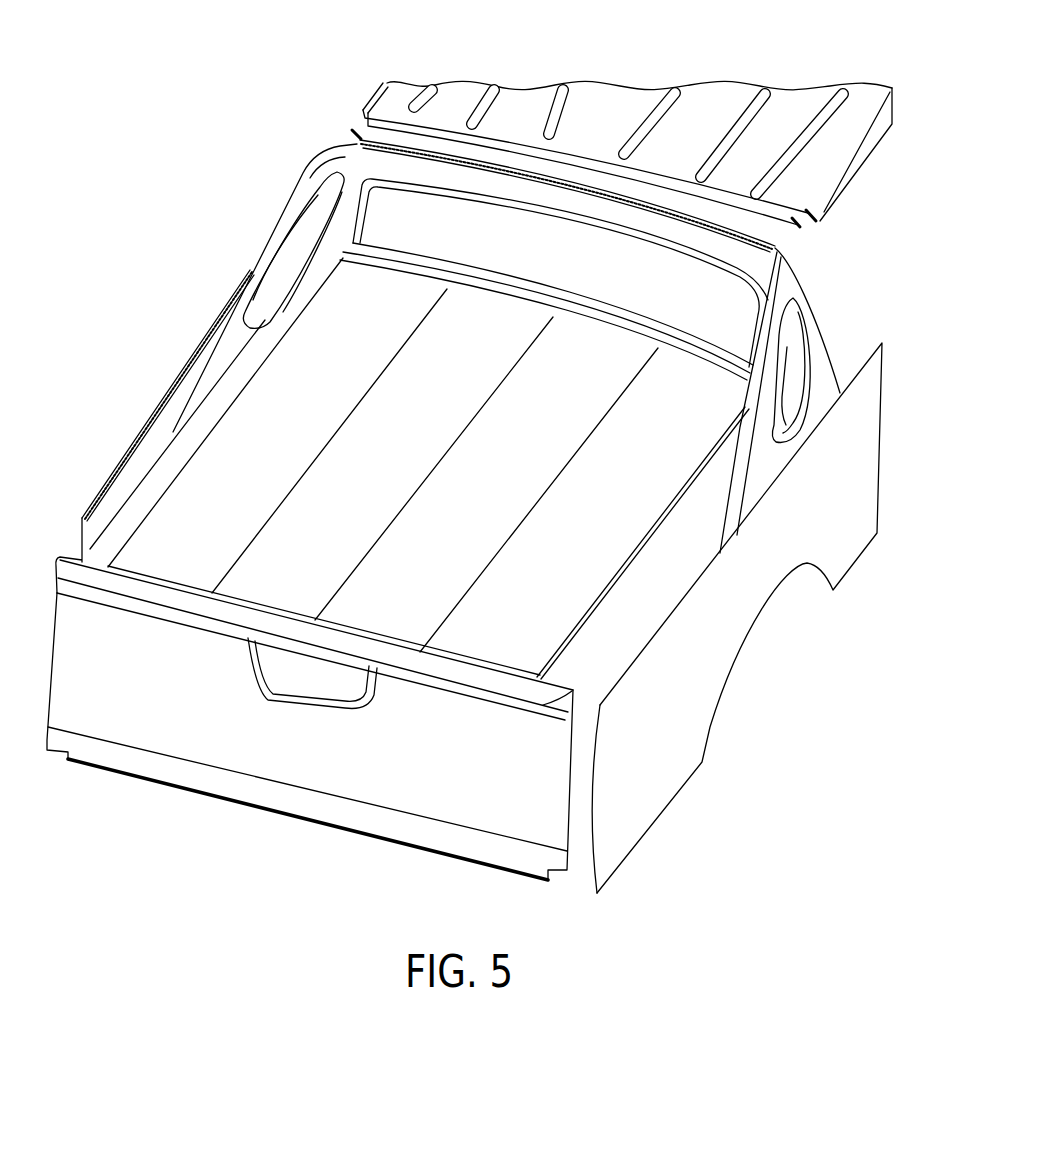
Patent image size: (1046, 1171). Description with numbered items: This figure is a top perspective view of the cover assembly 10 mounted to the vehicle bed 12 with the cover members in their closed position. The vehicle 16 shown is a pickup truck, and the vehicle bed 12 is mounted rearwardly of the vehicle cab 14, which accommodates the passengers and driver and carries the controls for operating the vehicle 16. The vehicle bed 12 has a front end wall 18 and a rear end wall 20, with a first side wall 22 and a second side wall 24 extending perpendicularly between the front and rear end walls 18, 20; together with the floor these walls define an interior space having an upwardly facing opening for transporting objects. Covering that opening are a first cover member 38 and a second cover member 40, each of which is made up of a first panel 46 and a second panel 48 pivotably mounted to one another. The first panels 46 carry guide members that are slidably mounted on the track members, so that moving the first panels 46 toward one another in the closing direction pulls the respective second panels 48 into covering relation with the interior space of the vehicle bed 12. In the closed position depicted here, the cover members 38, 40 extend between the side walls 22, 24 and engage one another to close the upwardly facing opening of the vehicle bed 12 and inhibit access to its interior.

The cover assembly 10 is at (293, 365).
The vehicle bed 12 is at (549, 723).
The vehicle cab 14 is at (370, 162).
The vehicle 16 is at (404, 84).
The front end wall 18 is at (398, 270).
The rear end wall 20 is at (418, 759).
The first side wall 22 is at (77, 547).
The second side wall 24 is at (612, 658).
The first cover member 38 is at (233, 424).
The second cover member 40 is at (590, 532).
The first panel 46 is at (364, 507).
The second panel 48 is at (250, 507).